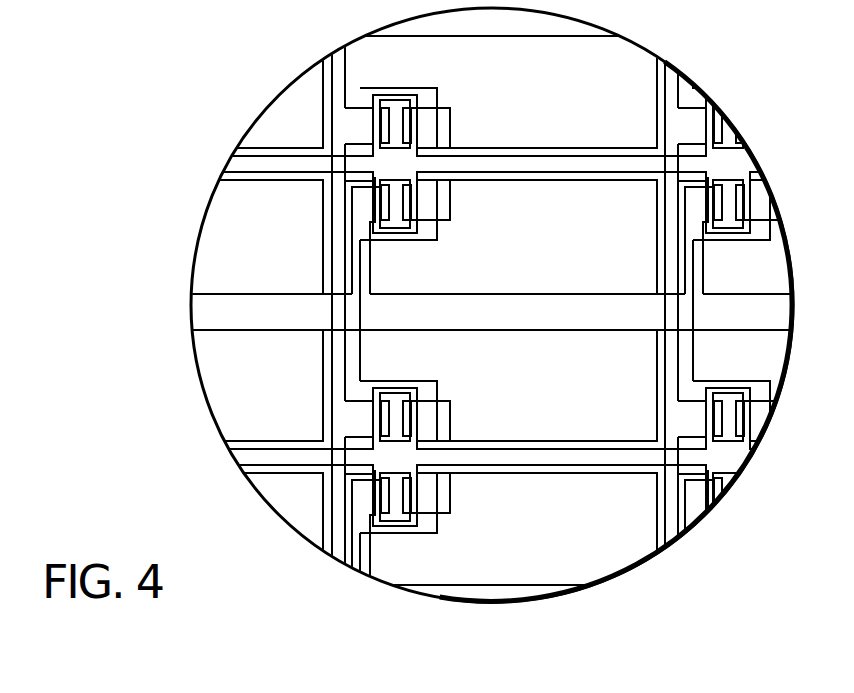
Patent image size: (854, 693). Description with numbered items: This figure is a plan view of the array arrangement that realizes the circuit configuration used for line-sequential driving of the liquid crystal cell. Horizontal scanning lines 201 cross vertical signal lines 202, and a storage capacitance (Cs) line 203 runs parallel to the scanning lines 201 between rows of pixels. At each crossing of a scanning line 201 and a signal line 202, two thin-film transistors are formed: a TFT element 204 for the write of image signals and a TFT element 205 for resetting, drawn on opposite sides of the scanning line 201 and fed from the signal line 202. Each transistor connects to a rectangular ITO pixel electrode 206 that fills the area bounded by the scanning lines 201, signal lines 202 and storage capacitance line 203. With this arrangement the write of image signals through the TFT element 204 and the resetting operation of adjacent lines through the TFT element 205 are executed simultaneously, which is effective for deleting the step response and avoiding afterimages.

The scanning line 201 is at (268, 164).
The signal line 202 is at (337, 276).
The storage capacitance (Cs) line 203 is at (245, 312).
The TFT element for the write of image signals 204 is at (407, 113).
The TFT element for resetting 205 is at (403, 208).
The ITO pixel electrode 206 is at (480, 355).